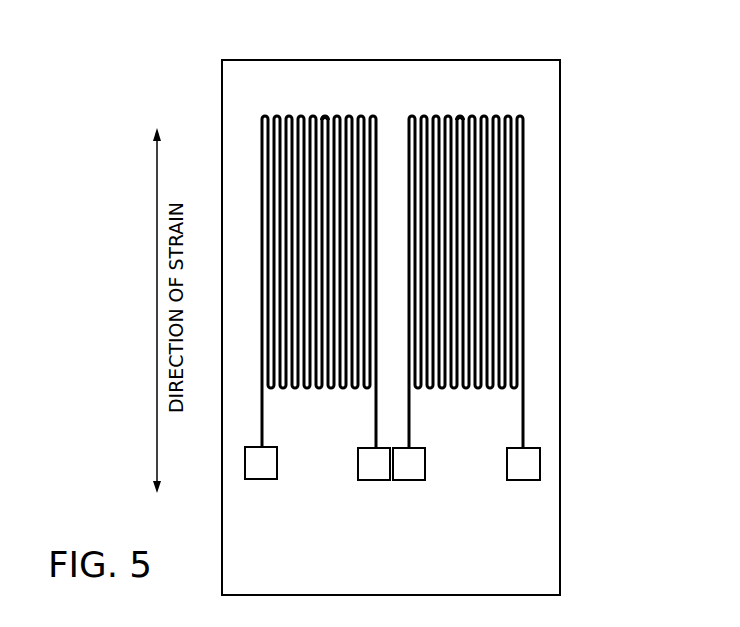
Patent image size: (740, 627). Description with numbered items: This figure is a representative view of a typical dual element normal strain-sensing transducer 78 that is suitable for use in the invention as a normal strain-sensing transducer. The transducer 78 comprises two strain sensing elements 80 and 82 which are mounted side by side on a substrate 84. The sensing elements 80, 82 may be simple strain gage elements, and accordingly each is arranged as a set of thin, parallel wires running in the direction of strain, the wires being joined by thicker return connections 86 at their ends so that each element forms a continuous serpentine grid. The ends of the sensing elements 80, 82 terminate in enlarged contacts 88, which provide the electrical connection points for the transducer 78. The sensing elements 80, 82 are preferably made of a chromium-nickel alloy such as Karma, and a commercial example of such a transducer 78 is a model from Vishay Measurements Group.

The dual element strain-sensing transducer 78 is at (398, 300).
The strain sensing element 80 is at (261, 148).
The strain sensing element 82 is at (527, 205).
The substrate 84 is at (553, 307).
The return connections 86 is at (325, 117).
The enlarged contacts 88 is at (262, 480).